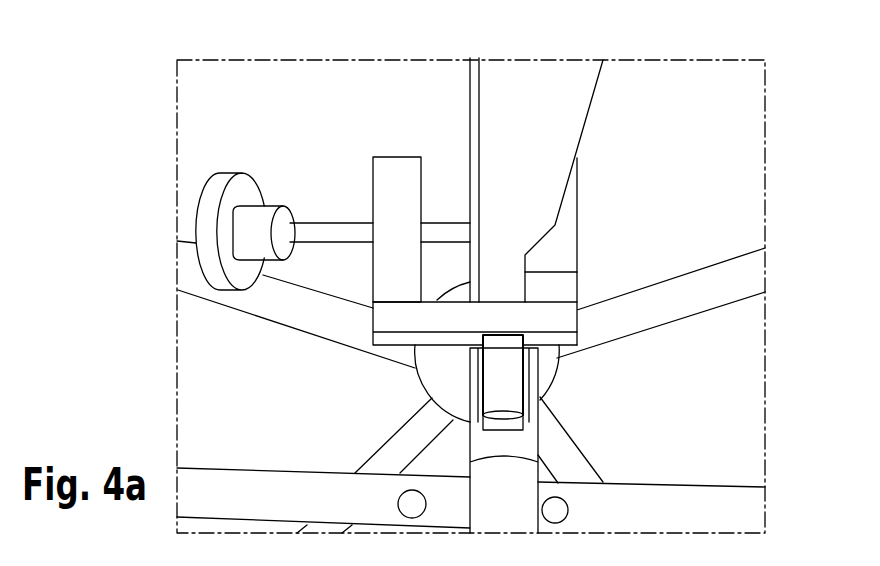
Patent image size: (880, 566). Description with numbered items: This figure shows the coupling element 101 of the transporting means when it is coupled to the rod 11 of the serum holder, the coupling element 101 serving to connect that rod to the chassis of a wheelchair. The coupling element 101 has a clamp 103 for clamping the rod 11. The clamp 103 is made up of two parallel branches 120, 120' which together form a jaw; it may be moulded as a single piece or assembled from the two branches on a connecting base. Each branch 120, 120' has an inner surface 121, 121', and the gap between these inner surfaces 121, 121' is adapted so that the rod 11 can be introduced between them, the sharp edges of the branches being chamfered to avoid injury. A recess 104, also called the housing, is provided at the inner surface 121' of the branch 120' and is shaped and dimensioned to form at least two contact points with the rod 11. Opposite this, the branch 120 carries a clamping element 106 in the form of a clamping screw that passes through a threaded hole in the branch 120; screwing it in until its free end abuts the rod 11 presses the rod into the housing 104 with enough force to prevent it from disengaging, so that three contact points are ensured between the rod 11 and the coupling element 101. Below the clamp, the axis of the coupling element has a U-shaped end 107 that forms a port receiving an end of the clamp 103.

The rod 11 is at (552, 112).
The coupling element 101 is at (584, 395).
The clamp 103 is at (385, 340).
The recess 104 is at (553, 230).
The clamping element 106 is at (260, 227).
The U-shaped end 107 is at (525, 426).
The branch 120 is at (296, 174).
The branch 120' is at (706, 208).
The inner surface 121 is at (381, 160).
The inner surface 121' is at (681, 284).